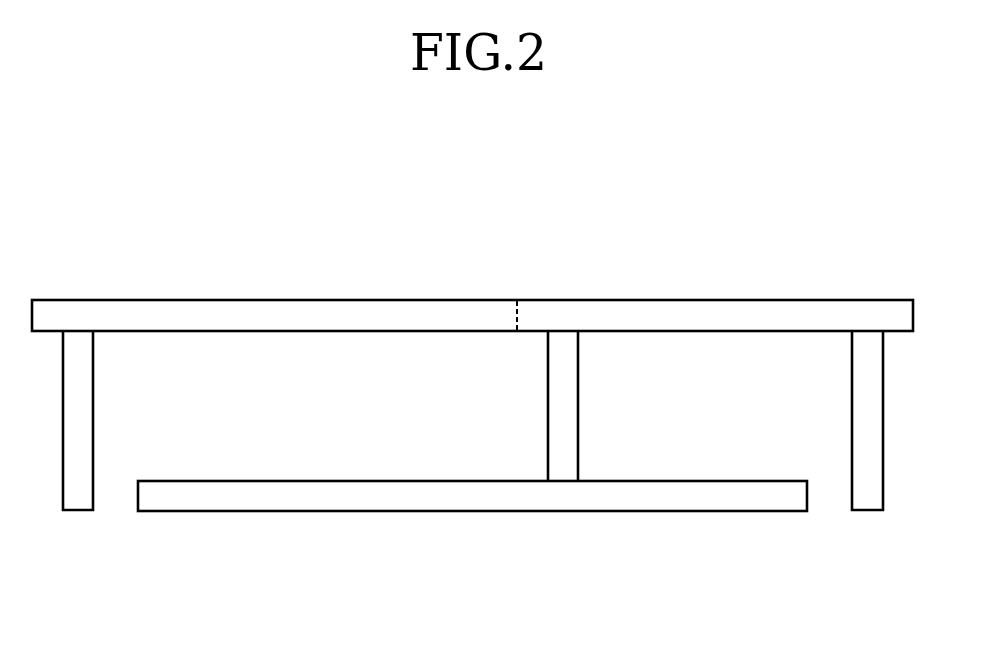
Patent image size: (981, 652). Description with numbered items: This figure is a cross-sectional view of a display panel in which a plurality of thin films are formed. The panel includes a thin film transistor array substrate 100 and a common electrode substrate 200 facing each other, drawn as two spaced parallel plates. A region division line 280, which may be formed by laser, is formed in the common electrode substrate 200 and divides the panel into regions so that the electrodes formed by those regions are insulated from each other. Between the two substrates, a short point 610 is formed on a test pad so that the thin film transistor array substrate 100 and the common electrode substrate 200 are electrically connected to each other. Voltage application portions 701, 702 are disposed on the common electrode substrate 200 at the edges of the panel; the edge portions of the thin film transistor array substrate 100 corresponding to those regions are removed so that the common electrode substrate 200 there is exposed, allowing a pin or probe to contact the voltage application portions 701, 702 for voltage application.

The thin film transistor array substrate 100 is at (705, 492).
The common electrode substrate 200 is at (722, 313).
The region division line 280 is at (518, 313).
The short point 610 is at (562, 402).
The voltage application portion 701 is at (868, 493).
The voltage application portion 702 is at (77, 493).